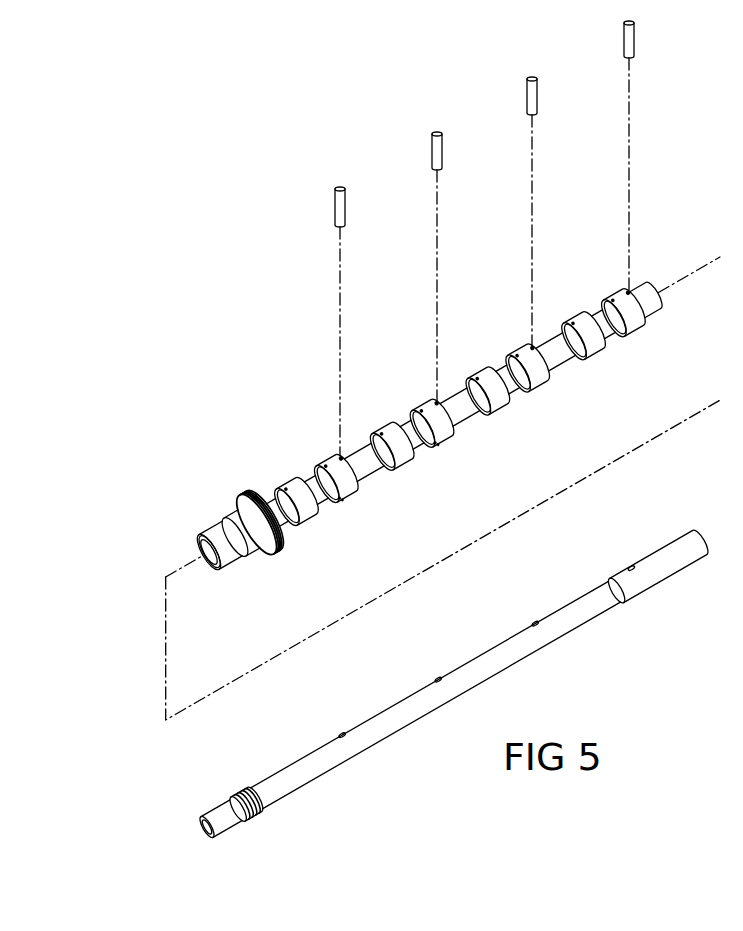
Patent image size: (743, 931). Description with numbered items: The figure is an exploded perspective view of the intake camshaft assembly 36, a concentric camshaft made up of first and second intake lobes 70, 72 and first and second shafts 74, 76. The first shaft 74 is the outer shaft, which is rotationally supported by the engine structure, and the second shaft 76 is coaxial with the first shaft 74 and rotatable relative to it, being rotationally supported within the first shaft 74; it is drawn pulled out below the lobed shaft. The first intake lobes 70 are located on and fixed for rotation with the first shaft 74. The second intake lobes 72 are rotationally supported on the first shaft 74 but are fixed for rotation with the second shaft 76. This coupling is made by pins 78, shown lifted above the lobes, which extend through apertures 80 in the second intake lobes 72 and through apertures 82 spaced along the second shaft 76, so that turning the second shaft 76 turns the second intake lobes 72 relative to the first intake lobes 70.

The intake camshaft assembly 36 is at (140, 426).
The first intake lobes 70 is at (310, 517).
The second intake lobes 72 is at (345, 502).
The first shaft 74 is at (269, 500).
The second shaft 76 is at (510, 665).
The pins 78 is at (335, 213).
The apertures 80 is at (341, 457).
The apertures 82 is at (341, 735).